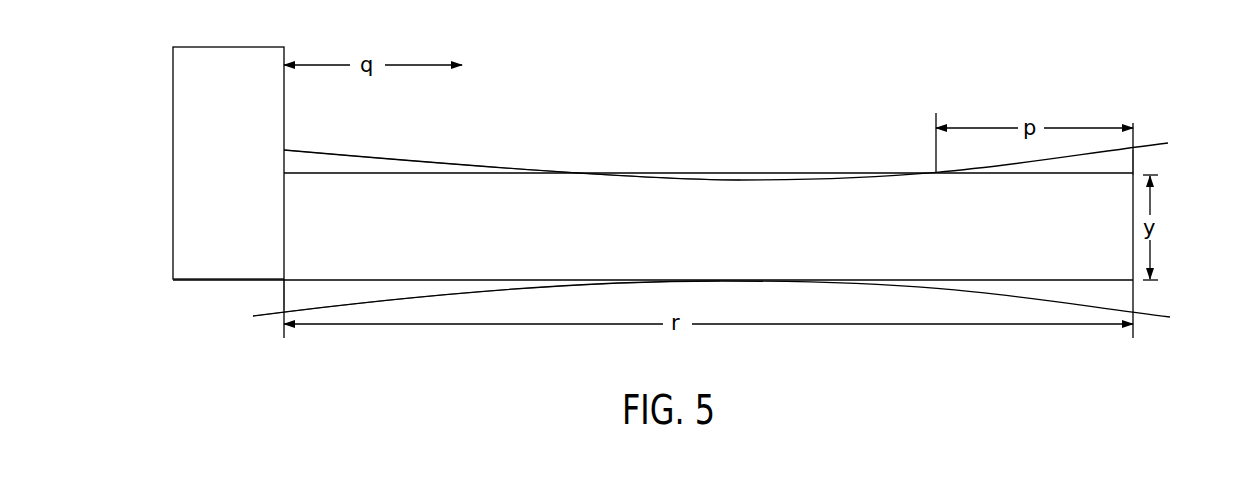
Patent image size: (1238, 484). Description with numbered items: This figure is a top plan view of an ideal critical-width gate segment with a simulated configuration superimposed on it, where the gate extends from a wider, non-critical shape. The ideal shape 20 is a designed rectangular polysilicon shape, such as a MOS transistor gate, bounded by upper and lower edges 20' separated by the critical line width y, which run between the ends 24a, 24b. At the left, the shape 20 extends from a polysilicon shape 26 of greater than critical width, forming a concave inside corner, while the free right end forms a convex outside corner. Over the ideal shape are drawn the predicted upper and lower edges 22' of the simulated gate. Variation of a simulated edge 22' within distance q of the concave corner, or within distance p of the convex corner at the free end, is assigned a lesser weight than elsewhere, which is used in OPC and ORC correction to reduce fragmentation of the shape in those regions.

The ideal critical width rectangular polysilicon shape 20 is at (653, 229).
The upper and lower edges 20' is at (738, 210).
The predicted upper and lower edges 22' is at (727, 233).
The end 24a is at (286, 294).
The end 24b is at (1133, 162).
The polysilicon shape of greater than critical width 26 is at (221, 273).